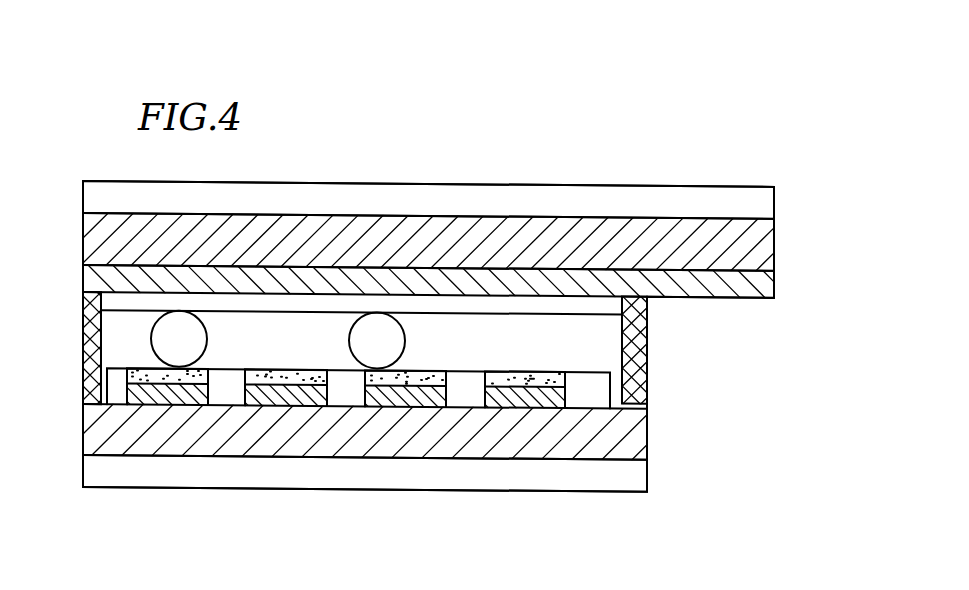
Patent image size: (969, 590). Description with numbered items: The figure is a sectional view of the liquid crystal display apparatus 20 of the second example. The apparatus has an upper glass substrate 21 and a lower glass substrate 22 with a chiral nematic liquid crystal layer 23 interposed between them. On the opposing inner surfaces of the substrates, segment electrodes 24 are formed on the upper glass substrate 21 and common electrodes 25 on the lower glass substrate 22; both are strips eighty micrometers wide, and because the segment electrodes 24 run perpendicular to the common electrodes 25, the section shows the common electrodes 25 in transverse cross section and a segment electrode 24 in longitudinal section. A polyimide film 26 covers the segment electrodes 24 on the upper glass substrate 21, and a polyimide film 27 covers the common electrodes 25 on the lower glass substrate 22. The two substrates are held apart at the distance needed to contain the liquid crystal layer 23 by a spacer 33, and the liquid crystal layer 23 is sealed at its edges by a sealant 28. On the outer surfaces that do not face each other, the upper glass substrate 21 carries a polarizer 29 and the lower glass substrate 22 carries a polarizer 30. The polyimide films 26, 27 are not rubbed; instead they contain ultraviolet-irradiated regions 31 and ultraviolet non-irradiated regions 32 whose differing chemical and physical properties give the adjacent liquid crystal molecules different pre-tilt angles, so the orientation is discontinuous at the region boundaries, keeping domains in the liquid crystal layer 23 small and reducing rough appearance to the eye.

The liquid crystal display apparatus 20 is at (612, 144).
The polarizer 29 is at (762, 207).
The upper glass substrate 21 is at (762, 247).
The segment electrodes 24 is at (762, 287).
The sealant 28 is at (84, 314).
The liquid crystal layer 23 is at (607, 353).
The polyimide film 26 is at (608, 307).
The spacer 33 is at (173, 320).
The polyimide film 27 is at (113, 386).
The common electrodes 25 is at (530, 402).
The ultraviolet-irradiated regions 31 is at (237, 386).
The ultraviolet non-irradiated regions 32 is at (217, 395).
The lower glass substrate 22 is at (637, 438).
The polarizer 30 is at (633, 482).